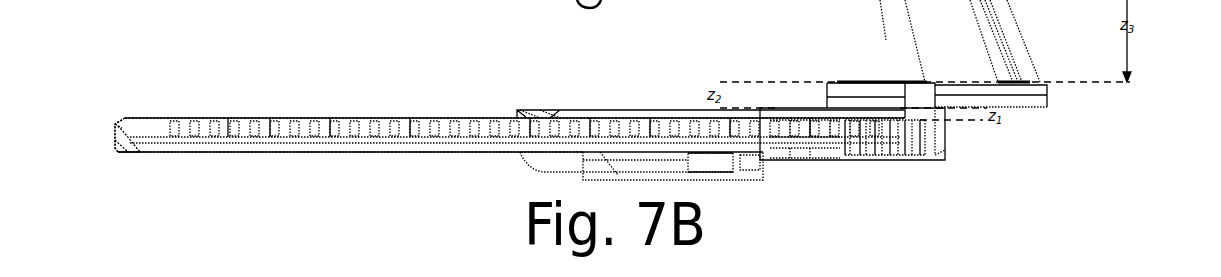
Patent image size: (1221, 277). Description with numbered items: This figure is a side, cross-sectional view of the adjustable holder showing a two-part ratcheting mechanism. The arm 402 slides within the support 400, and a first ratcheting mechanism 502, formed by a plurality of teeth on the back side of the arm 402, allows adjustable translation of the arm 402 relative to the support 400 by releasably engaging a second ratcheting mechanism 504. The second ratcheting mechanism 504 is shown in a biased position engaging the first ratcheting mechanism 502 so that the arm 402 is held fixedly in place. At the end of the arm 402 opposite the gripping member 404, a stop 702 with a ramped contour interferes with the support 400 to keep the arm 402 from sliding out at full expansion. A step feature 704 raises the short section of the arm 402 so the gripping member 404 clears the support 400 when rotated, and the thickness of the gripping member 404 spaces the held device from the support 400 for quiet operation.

The support 400 is at (552, 110).
The arm 402 is at (229, 118).
The gripping member 404 is at (1045, 88).
The first ratcheting mechanism 502 is at (443, 142).
The second ratcheting mechanism 504 is at (745, 180).
The stop 702 is at (122, 118).
The step feature 704 is at (824, 110).